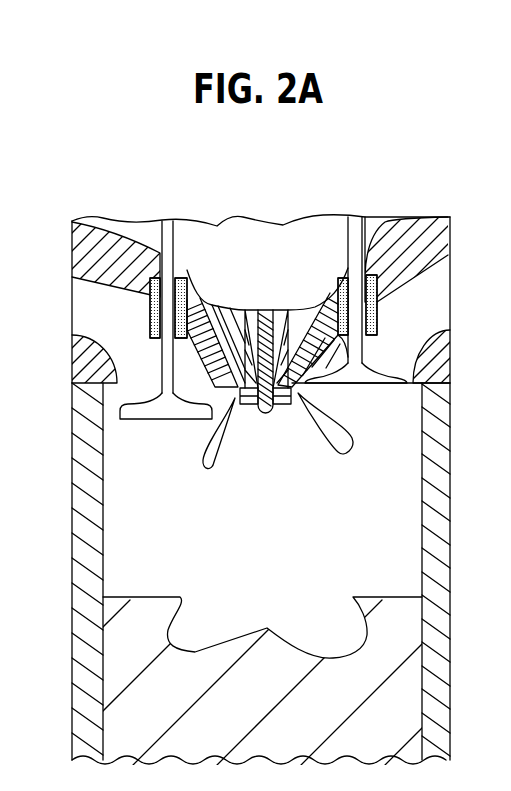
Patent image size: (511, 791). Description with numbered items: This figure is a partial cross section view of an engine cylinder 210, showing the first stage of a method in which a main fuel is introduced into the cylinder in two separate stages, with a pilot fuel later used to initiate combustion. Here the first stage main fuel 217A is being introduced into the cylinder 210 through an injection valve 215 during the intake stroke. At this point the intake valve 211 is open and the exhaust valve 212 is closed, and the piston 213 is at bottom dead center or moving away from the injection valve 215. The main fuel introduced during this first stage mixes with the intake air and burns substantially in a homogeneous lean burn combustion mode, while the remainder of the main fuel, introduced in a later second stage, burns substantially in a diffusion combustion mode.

The cylinder 210 is at (199, 559).
The intake valve 211 is at (177, 222).
The exhaust valve 212 is at (366, 217).
The piston 213 is at (272, 693).
The injection valve 215 is at (247, 307).
The first stage main fuel 217A is at (222, 455).